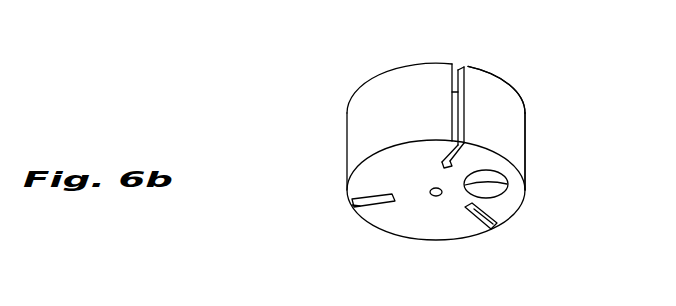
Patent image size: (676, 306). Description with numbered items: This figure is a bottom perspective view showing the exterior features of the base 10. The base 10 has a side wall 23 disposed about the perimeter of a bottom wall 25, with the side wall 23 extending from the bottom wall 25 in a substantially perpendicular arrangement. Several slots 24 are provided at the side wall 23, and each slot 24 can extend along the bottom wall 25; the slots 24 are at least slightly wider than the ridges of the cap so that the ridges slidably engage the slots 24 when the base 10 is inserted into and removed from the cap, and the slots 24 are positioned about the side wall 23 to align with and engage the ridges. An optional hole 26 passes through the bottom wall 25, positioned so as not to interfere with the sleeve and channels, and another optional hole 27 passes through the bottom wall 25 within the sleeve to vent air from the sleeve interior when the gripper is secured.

The base 10 is at (493, 78).
The side wall 23 is at (487, 132).
The slot 24 is at (456, 85).
The bottom wall 25 is at (385, 173).
The hole 26 is at (487, 180).
The hole 27 is at (436, 196).